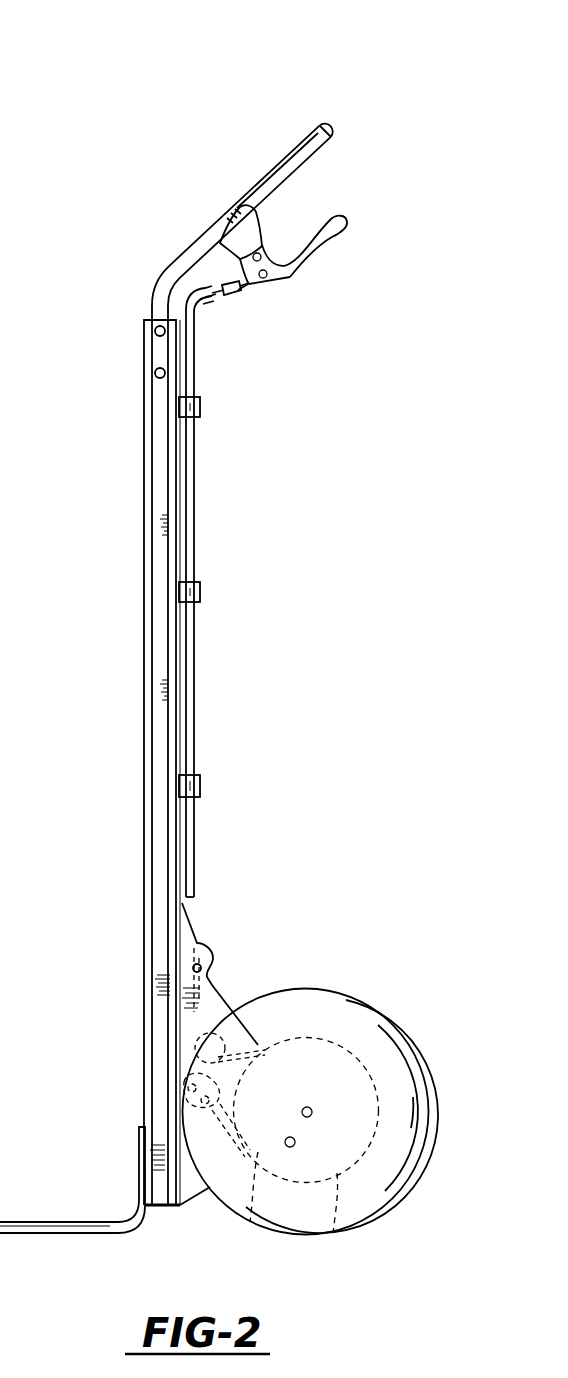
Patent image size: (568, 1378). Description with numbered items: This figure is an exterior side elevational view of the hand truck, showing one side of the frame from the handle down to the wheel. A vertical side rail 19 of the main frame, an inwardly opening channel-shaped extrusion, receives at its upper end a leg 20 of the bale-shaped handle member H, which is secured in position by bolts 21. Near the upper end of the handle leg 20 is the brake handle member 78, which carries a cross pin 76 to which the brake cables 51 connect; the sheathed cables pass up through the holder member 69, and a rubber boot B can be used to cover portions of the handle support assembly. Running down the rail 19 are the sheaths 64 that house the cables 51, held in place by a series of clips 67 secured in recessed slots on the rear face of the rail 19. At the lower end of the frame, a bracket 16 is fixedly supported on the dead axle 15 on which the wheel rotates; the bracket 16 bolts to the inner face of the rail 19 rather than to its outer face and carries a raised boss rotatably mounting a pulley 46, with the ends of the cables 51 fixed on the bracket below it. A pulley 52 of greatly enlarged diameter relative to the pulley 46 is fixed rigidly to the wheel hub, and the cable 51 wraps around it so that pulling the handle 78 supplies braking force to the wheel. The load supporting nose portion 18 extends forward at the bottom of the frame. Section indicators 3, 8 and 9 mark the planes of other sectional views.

The handle member H is at (337, 124).
The legs 20 is at (277, 166).
The rubber boot B is at (255, 233).
The handle member 78 is at (330, 241).
The cross pin 76 is at (290, 281).
The holder member 69 is at (238, 293).
The side rails 19 is at (152, 554).
The bolts 21 is at (155, 374).
The sheaths 64 is at (194, 516).
The clips 67 is at (200, 409).
The brake cables 51 is at (198, 920).
The pulley 46 is at (235, 995).
The brackets 16 is at (250, 1030).
The dead axle 15 is at (306, 1106).
The pulleys 52 is at (334, 1234).
The load supporting nose portion 18 is at (62, 1232).
The section line 8- 8 is at (142, 937).
The section line 3- 3 is at (143, 1115).
The section line 9- 9 is at (134, 1172).